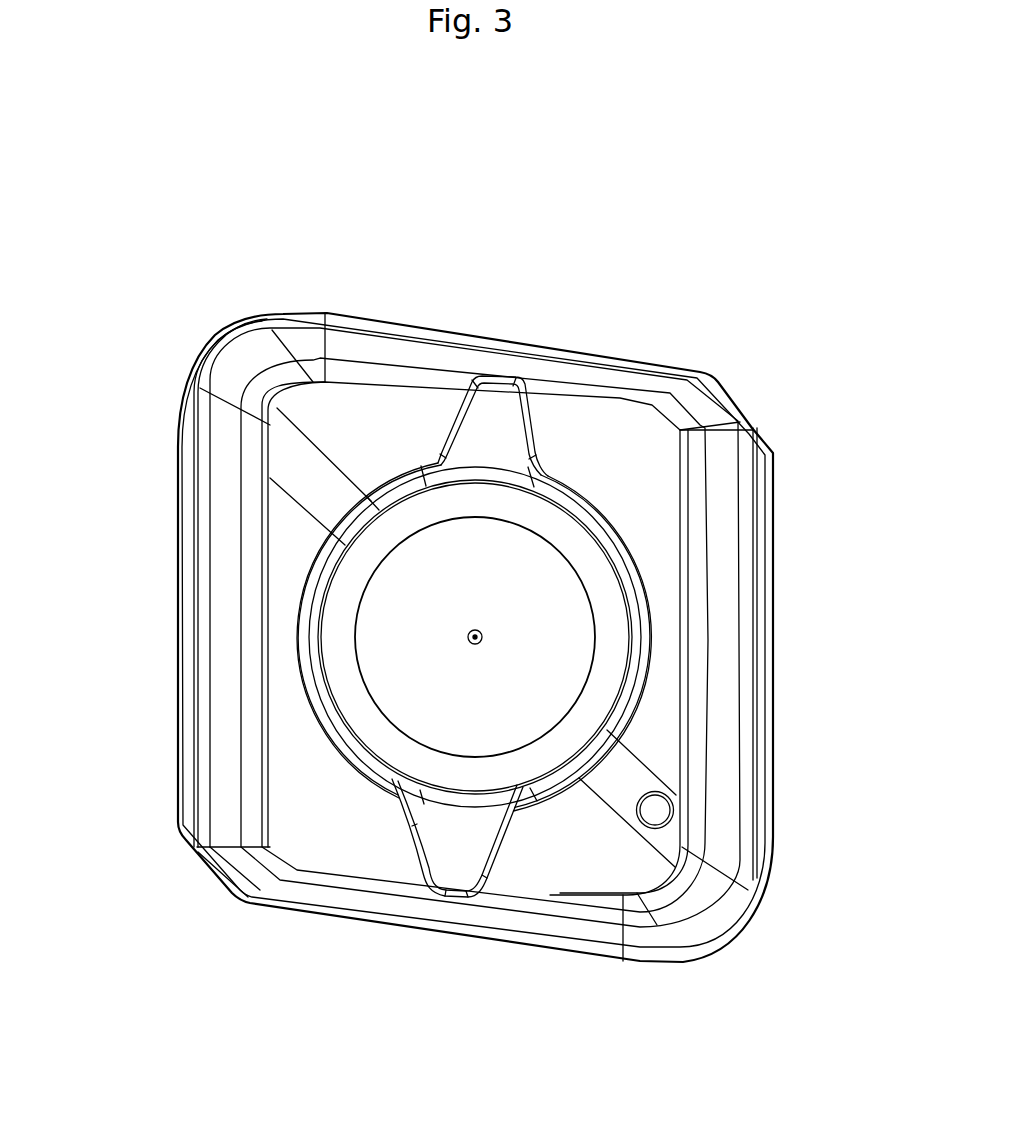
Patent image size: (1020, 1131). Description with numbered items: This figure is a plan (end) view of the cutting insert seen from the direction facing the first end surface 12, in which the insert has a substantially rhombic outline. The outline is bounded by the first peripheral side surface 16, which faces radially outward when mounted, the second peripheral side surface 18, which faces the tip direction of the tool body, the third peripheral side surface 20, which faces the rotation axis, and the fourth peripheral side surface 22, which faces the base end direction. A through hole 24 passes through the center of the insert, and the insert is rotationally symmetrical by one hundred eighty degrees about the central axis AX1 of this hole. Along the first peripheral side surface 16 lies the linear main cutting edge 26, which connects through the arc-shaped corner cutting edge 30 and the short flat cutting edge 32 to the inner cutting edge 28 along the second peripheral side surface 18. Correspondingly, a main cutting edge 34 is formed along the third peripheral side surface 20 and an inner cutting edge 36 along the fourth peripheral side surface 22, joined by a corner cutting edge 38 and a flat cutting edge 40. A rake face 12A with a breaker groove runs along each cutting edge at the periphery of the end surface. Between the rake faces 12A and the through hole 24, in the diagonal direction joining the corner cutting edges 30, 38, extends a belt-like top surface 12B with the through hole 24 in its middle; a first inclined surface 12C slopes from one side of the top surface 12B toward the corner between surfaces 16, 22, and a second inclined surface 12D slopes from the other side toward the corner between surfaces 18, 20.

The first end surface 12 is at (593, 433).
The rake face 12A is at (362, 344).
The top surface 12B is at (305, 470).
The first inclined surface 12C is at (657, 522).
The second inclined surface 12D is at (317, 840).
The first peripheral side surface 16 is at (812, 789).
The second peripheral side surface 18 is at (348, 966).
The third peripheral side surface 20 is at (150, 553).
The fourth peripheral side surface 22 is at (526, 244).
The through hole 24 is at (400, 670).
The main cutting edge 26 is at (757, 668).
The inner cutting edge 28 is at (460, 940).
The corner cutting edge 30 is at (727, 945).
The flat cutting edge 32 is at (657, 965).
The main cutting edge 34 is at (193, 457).
The inner cutting edge 36 is at (540, 347).
The corner cutting edge 38 is at (222, 328).
The flat cutting edge 40 is at (296, 313).
The central axis AX1 is at (476, 630).